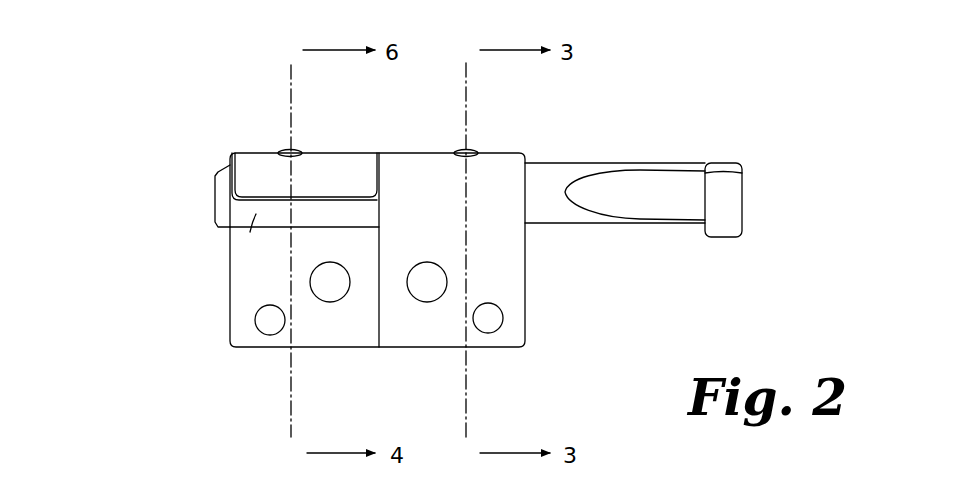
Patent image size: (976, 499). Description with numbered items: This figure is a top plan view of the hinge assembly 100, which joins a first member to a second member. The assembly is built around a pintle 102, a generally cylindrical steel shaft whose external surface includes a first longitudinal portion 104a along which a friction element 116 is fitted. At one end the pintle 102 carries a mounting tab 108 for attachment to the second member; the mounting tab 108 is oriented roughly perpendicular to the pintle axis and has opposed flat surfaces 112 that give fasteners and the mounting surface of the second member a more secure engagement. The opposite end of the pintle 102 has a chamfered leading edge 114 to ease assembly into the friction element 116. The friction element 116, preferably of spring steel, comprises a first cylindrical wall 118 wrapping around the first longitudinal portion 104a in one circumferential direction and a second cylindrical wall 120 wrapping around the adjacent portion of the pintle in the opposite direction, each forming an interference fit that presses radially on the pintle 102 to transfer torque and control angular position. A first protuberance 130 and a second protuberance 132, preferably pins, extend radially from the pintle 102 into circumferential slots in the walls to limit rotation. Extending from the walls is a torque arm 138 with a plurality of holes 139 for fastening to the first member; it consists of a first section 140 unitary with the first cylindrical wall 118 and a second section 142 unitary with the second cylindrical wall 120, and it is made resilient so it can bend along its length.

The hinge assembly 100 is at (158, 168).
The pintle 102 is at (560, 155).
The first longitudinal portion 104a is at (255, 215).
The mounting tab 108 is at (745, 223).
The opposed flat surfaces 112 is at (677, 170).
The chamfered leading edge 114 is at (218, 224).
The friction element 116 is at (380, 148).
The first cylindrical wall 118 is at (250, 152).
The second cylindrical wall 120 is at (522, 152).
The first protuberance 130 is at (285, 150).
The second protuberance 132 is at (464, 150).
The torque arm 138 is at (382, 356).
The holes 139 is at (330, 302).
The first section 140 is at (232, 347).
The second section 142 is at (523, 345).